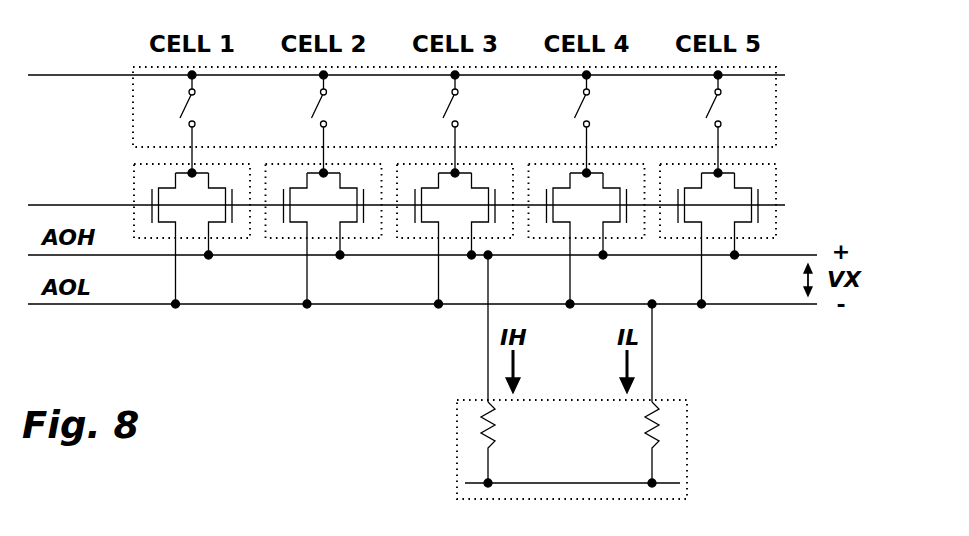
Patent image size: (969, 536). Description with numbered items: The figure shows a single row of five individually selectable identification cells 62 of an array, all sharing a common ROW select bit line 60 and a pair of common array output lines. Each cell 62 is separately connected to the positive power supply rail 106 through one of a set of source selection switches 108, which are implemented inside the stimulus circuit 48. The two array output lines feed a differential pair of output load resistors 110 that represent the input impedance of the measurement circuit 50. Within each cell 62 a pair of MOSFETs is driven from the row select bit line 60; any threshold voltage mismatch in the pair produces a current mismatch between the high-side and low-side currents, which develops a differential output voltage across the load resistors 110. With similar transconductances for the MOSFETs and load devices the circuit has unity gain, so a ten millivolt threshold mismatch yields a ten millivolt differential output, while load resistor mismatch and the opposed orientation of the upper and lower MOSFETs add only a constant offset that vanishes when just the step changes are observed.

The positive power supply rail 106 is at (113, 72).
The source selection switches 108 is at (178, 102).
The ROW select bit line 60 is at (80, 201).
The cells 62 is at (226, 238).
The stimulus circuit 48 is at (786, 59).
The measurement circuit 50 is at (697, 400).
The output load resistors 110 is at (503, 430).